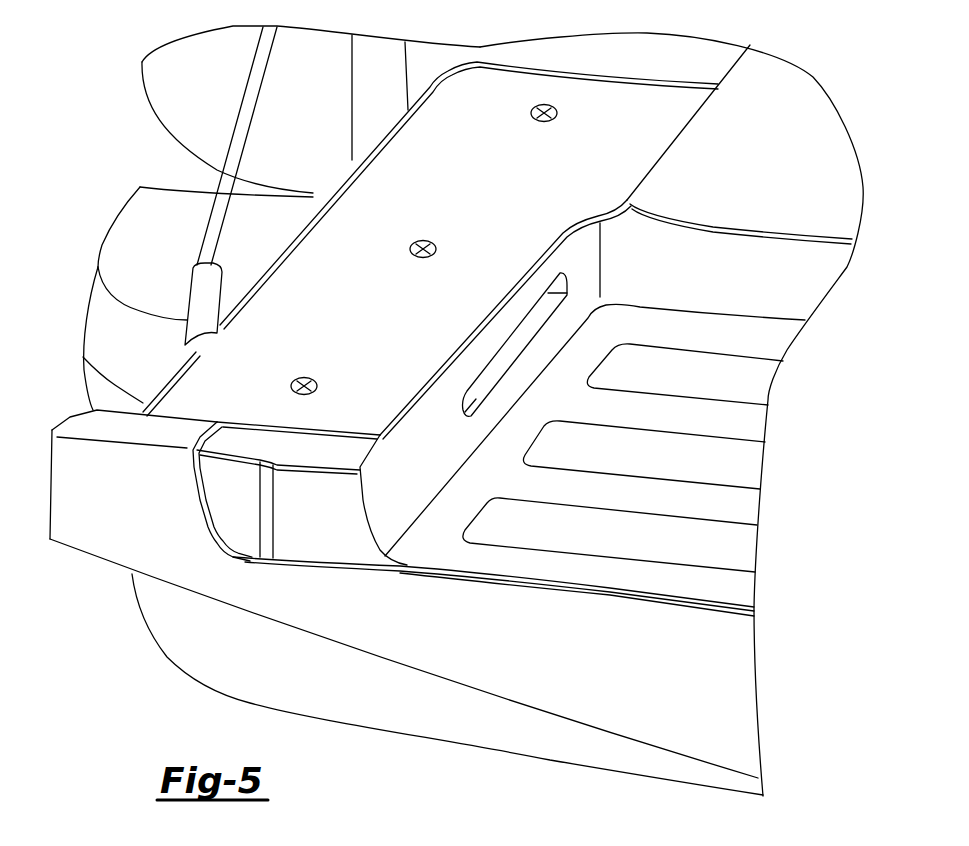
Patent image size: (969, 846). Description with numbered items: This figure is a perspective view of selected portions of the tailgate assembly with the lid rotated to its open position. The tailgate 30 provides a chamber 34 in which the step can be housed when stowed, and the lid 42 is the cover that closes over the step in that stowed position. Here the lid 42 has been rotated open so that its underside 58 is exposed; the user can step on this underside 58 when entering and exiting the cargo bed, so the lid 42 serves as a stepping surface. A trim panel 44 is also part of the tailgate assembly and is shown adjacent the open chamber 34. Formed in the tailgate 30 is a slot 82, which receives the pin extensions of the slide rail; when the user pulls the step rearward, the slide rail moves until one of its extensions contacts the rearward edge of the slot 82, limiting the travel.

The tailgate 30 is at (172, 374).
The chamber 34 is at (680, 438).
The lid 42 is at (827, 152).
The trim panel 44 is at (602, 100).
The underside 58 is at (790, 88).
The slot 82 is at (470, 407).